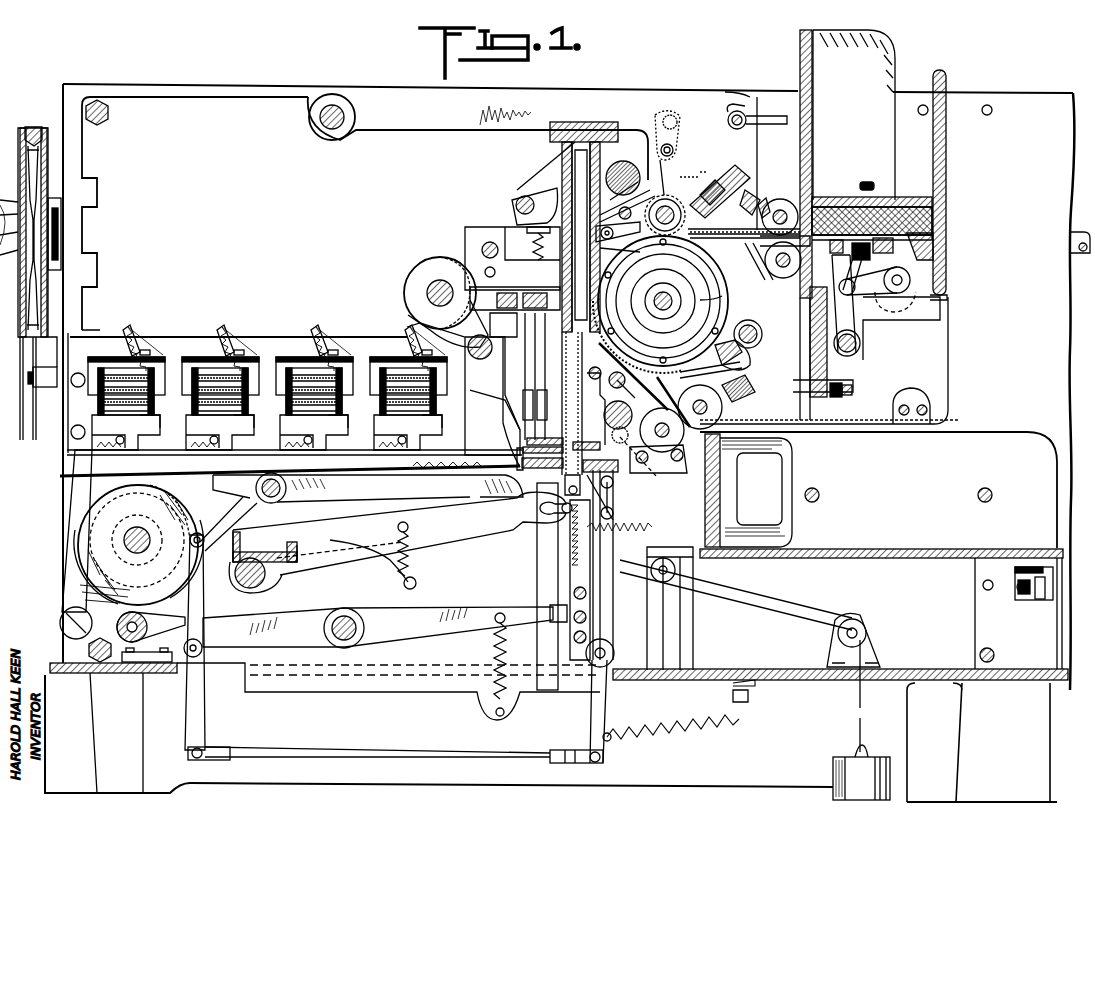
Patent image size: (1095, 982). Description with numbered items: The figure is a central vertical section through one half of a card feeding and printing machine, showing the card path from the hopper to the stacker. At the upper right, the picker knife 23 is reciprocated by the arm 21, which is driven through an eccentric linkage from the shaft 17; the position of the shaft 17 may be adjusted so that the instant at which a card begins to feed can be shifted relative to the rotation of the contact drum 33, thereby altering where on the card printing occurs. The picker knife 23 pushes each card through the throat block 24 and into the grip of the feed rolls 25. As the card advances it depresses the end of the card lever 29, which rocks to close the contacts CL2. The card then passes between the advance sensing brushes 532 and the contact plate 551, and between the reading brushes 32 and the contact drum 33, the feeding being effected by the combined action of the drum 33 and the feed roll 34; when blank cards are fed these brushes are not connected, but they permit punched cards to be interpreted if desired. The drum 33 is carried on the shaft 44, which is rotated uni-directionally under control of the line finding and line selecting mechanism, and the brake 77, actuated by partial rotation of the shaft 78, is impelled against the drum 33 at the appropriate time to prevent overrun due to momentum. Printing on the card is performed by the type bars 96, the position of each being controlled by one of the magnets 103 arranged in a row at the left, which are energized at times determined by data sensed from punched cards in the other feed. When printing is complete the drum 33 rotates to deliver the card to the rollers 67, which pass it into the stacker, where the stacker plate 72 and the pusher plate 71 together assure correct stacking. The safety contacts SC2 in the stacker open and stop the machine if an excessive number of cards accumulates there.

The magnets 103 is at (163, 362).
The type bars 96 is at (567, 150).
The feed roll 34 is at (636, 198).
The reading brushes 32 is at (738, 184).
The advance sensing brushes 532 is at (753, 200).
The feed rolls 25 is at (770, 207).
The picker knife 23 is at (933, 250).
The throat block 24 is at (843, 285).
The card lever 29 is at (770, 250).
The contact drum 33 is at (722, 306).
The arm 21 is at (860, 325).
The shaft 17 is at (893, 297).
The shaft 44 is at (663, 312).
The contact plate 551 is at (705, 247).
The shaft 78 is at (753, 340).
The brake 77 is at (713, 367).
The rollers 67 is at (713, 407).
The contacts CL2 is at (847, 393).
The stacker plate 72 is at (733, 497).
The pusher plate 71 is at (690, 510).
The safety contacts SC2 is at (1032, 602).